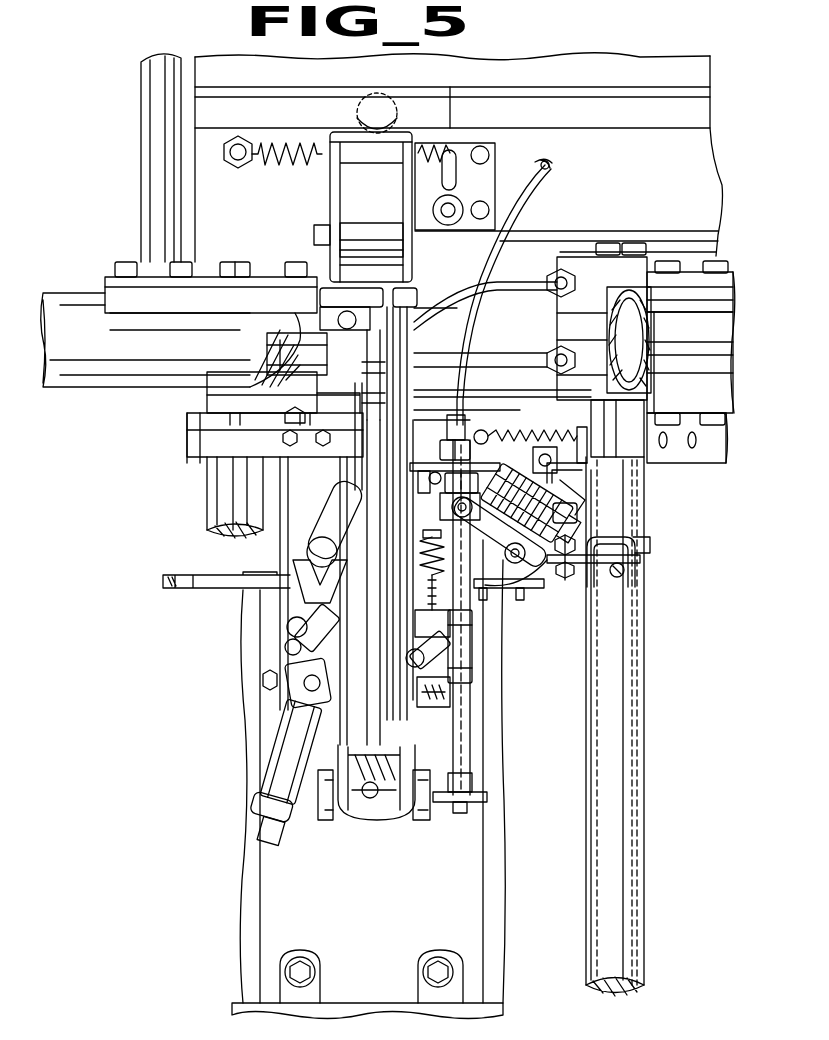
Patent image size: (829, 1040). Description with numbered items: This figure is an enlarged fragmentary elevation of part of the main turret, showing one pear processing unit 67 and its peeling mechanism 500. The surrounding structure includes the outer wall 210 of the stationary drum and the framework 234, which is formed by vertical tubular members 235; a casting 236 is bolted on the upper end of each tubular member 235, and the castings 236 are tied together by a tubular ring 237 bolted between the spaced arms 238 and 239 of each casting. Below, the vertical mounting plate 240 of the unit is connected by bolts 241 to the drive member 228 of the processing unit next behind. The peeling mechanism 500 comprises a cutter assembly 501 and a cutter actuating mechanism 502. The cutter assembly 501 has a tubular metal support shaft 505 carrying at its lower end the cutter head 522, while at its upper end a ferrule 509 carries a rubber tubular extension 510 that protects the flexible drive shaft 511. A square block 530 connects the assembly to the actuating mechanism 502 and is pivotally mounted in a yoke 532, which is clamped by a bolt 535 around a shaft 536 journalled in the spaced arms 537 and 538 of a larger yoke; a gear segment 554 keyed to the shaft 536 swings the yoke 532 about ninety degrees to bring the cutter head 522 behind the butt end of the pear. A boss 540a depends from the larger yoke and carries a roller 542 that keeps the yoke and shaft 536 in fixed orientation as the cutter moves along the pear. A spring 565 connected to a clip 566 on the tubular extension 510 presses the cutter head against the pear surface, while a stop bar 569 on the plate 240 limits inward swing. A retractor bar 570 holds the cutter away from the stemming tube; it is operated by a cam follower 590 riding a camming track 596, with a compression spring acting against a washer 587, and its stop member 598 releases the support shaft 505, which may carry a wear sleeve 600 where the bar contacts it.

The pear processing unit 67 is at (135, 668).
The outer wall 210 is at (197, 413).
The drive member 228 is at (340, 1010).
The framework 234 is at (638, 775).
The vertical tubular member 235 is at (645, 652).
The casting 236 is at (208, 246).
The tubular ring 237 is at (97, 337).
The arm of casting 238 is at (228, 281).
The arm of casting 239 is at (212, 406).
The vertical mounting plate 240 is at (393, 931).
The bolts 241 is at (435, 973).
The peeling mechanism 500 is at (605, 590).
The cutter assembly 501 is at (495, 790).
The cutter actuating mechanism 502 is at (605, 505).
The tubular metal support shaft 505 is at (462, 708).
The ferrule 509 is at (470, 470).
The rubber tubular extension 510 is at (478, 331).
The flexible drive shaft 511 is at (541, 163).
The cutter head 522 is at (475, 815).
The square block 530 is at (447, 514).
The yoke 532 is at (499, 536).
The bolt 535 is at (500, 590).
The shaft 536 is at (520, 445).
The arm of yoke 537 is at (580, 497).
The arm of yoke 538 is at (577, 546).
The boss 540a is at (528, 585).
The roller 542 is at (520, 590).
The gear segment 554 is at (575, 520).
The spring 565 is at (538, 447).
The clip 566 is at (473, 424).
The stop bar 569 is at (455, 688).
The retractor bar 570 is at (455, 628).
The washer 587 is at (590, 418).
The cam follower 590 is at (437, 470).
The camming track 596 is at (196, 448).
The stop member 598 is at (462, 652).
The wear sleeve 600 is at (472, 662).